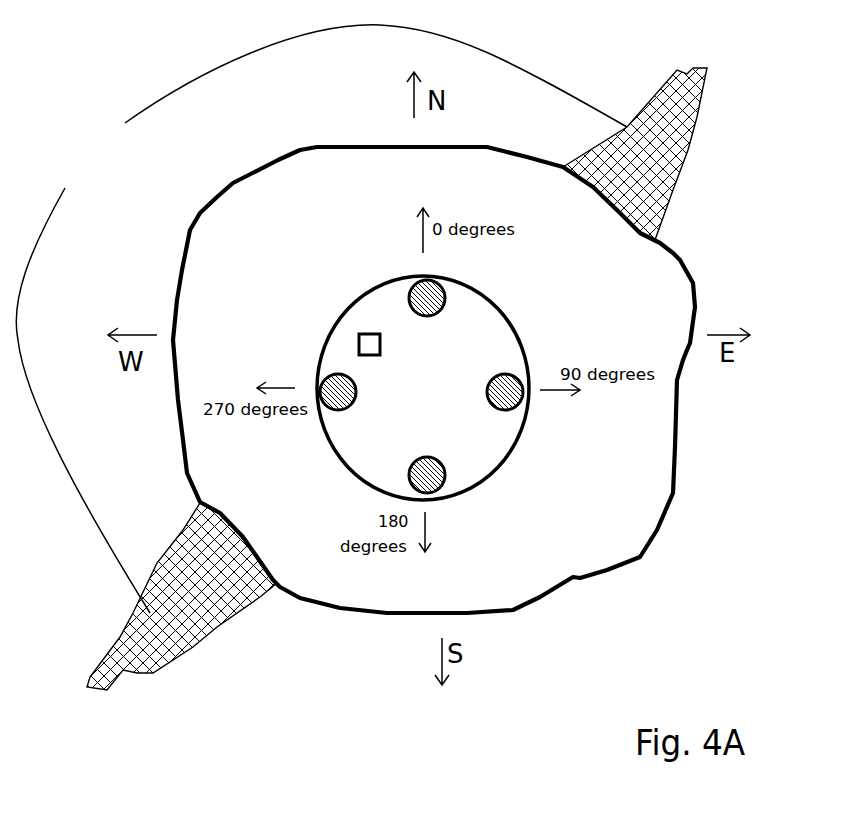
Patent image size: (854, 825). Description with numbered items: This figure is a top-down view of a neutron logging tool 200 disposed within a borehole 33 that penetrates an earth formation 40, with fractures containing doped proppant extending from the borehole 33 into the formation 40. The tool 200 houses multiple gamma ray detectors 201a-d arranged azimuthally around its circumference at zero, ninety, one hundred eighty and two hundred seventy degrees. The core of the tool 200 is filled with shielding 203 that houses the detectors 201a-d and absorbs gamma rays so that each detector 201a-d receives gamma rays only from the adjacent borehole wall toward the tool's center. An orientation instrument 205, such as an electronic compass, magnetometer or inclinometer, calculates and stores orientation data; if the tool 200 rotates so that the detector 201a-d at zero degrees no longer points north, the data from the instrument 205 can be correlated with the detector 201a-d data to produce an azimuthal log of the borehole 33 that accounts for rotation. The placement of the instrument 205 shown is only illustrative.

The borehole 33 is at (673, 497).
The earth formation 40 is at (421, 357).
The neutron logging tool 200 is at (357, 301).
The gamma ray detectors 201a-d is at (430, 316).
The shielding 203 is at (483, 345).
The orientation instrument 205 is at (358, 347).